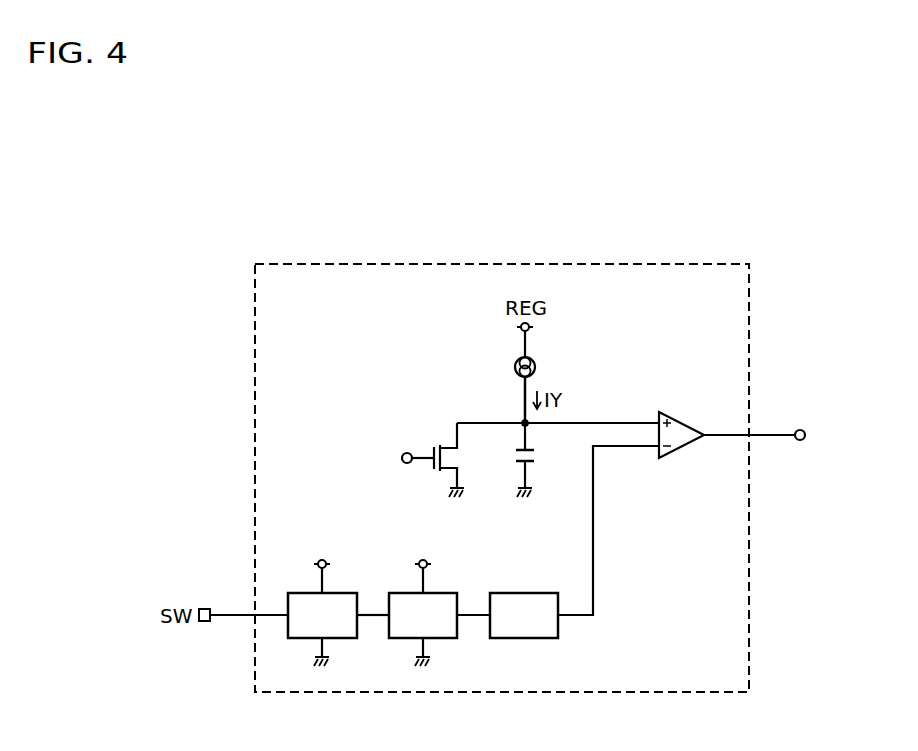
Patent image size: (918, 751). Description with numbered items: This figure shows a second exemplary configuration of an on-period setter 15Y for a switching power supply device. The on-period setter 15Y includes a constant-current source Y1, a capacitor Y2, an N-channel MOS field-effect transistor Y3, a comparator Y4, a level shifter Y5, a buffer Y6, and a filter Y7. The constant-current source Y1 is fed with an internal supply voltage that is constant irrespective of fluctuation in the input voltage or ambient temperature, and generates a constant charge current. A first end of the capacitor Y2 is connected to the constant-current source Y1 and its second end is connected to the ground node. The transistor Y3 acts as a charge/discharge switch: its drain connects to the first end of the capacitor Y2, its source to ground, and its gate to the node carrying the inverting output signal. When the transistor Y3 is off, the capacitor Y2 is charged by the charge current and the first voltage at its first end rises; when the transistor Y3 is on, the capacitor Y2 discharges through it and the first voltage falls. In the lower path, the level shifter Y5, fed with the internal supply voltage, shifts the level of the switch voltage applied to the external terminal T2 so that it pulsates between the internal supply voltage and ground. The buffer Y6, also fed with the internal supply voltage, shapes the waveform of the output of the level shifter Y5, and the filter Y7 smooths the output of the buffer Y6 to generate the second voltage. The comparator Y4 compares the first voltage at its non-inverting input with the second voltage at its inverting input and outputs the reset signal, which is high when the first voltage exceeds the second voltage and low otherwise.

The on-period setter 15Y is at (500, 264).
The constant-current source Y1 is at (506, 367).
The capacitor Y2 is at (547, 460).
The N-channel MOS field-effect transistor Y3 is at (434, 460).
The comparator Y4 is at (680, 421).
The level shifter Y5 is at (345, 592).
The buffer Y6 is at (445, 592).
The filter Y7 is at (520, 591).
The external terminal T2 is at (203, 609).